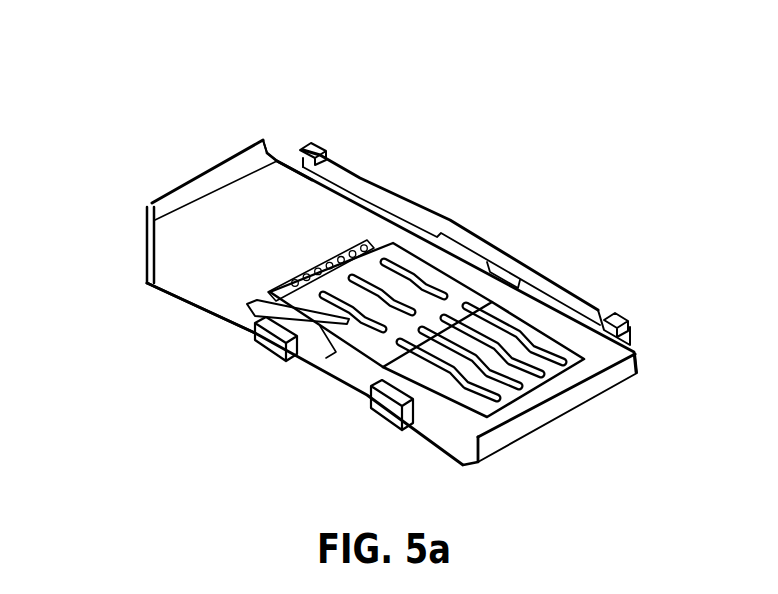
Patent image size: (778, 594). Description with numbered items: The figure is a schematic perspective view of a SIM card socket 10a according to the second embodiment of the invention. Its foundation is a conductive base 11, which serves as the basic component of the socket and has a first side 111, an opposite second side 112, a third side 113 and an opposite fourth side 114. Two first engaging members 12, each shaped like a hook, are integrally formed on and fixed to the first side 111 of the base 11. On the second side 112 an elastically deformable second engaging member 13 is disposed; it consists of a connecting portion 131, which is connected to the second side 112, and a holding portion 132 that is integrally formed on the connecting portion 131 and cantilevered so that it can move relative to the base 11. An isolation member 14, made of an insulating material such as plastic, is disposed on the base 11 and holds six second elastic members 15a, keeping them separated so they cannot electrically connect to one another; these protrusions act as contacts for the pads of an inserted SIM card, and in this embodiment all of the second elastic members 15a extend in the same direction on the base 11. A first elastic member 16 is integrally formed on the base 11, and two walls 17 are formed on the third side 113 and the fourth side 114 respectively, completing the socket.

The SIM card socket 10a is at (90, 68).
The base 11 is at (243, 215).
The first side 111 is at (180, 300).
The second side 112 is at (288, 163).
The third side 113 is at (252, 160).
The fourth side 114 is at (607, 388).
The first engaging member 12 is at (273, 345).
The second engaging member 13 is at (483, 181).
The connecting portion 131 is at (472, 233).
The holding portion 132 is at (459, 197).
The isolation member 14 is at (367, 340).
The second elastic members 15a is at (508, 393).
The first elastic member 16 is at (335, 360).
The wall 17 is at (190, 193).